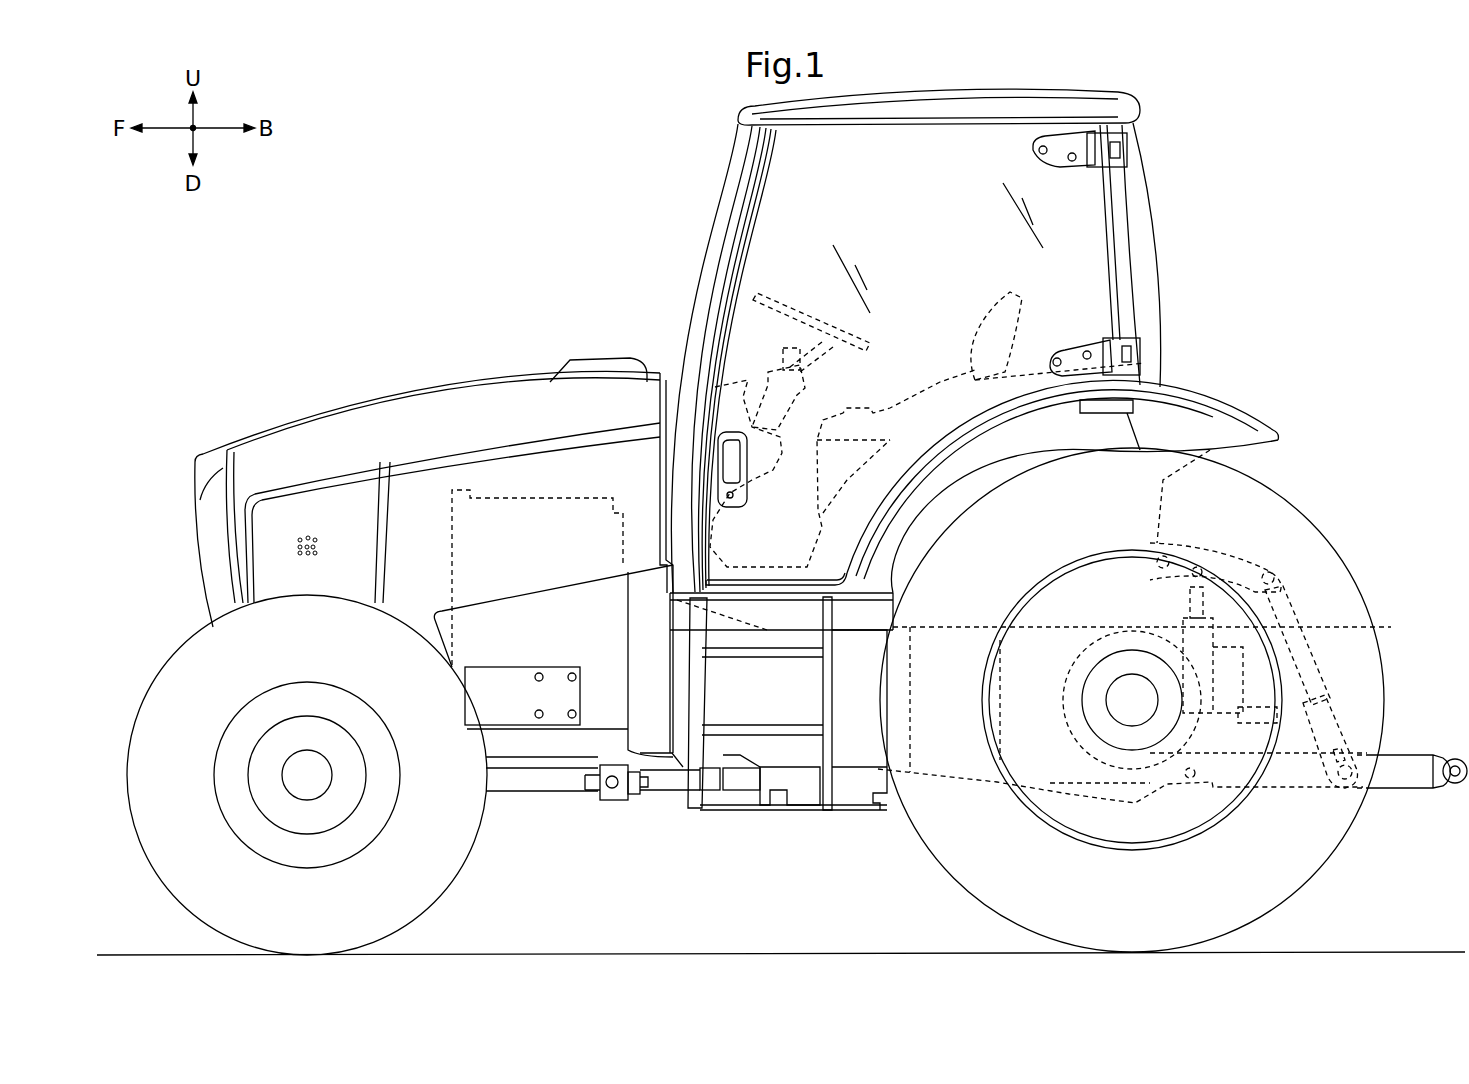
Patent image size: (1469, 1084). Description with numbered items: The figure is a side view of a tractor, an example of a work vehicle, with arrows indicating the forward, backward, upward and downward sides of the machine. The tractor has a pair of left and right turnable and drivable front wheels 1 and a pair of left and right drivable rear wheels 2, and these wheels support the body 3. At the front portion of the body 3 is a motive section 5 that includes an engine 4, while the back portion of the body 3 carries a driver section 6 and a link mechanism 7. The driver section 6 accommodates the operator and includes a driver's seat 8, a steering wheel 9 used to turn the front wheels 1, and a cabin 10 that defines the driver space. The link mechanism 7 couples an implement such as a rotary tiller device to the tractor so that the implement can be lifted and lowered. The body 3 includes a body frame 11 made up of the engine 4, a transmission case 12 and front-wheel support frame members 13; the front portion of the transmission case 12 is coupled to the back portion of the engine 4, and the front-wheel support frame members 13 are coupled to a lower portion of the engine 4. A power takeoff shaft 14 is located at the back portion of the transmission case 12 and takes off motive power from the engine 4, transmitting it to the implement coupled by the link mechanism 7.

The front wheels 1 is at (463, 872).
The rear wheels 2 is at (948, 872).
The body 3 is at (834, 842).
The engine 4 is at (597, 718).
The motive section 5 is at (447, 380).
The driver section 6 is at (803, 203).
The link mechanism 7 is at (1409, 796).
The driver's seat 8 is at (987, 327).
The steering wheel 9 is at (803, 315).
The cabin 10 is at (1100, 112).
The body frame 11 is at (799, 775).
The transmission case 12 is at (855, 748).
The front-wheel support frame members 13 is at (507, 678).
The power takeoff shaft 14 is at (1266, 786).